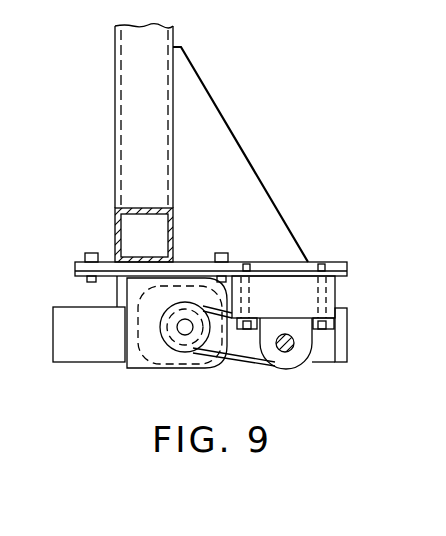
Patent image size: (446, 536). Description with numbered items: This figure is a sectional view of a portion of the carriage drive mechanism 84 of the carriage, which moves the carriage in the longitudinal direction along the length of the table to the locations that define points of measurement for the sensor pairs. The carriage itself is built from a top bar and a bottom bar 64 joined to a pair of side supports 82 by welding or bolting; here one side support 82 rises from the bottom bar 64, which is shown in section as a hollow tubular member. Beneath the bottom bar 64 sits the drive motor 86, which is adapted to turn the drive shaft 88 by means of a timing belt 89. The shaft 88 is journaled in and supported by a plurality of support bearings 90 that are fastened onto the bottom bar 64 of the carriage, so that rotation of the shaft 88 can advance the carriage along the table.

The side support 82 is at (115, 125).
The carriage bottom bar 64 is at (115, 219).
The carriage drive mechanism 84 is at (158, 375).
The drive motor 86 is at (127, 366).
The drive shaft 88 is at (283, 336).
The timing belt 89 is at (238, 364).
The support bearing 90 is at (284, 367).